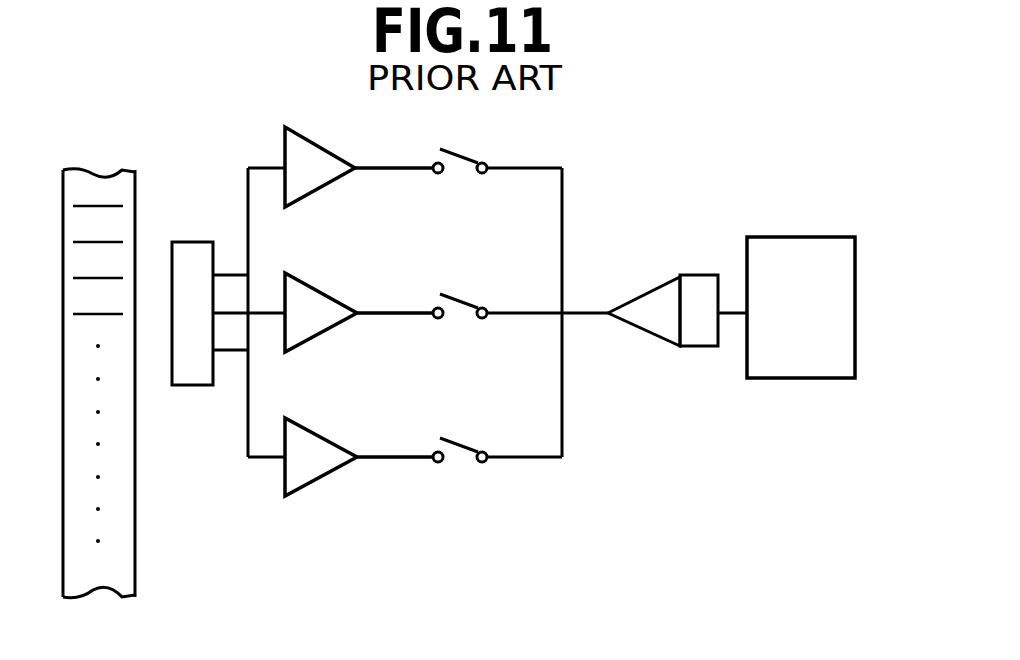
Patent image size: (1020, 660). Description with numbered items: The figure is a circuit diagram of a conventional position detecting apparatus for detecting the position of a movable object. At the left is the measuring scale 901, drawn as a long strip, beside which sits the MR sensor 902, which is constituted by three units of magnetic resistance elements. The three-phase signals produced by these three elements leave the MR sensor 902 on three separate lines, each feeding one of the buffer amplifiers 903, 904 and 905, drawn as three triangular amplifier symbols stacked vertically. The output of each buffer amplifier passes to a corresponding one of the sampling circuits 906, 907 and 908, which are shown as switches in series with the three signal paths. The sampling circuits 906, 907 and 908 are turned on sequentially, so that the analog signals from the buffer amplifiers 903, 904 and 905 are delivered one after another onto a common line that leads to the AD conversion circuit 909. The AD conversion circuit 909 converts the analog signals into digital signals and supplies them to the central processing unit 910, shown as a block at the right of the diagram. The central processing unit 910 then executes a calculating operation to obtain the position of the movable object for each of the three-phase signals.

The measuring scale 901 is at (135, 537).
The MR sensor 902 is at (195, 375).
The buffer amplifier 903 is at (330, 175).
The buffer amplifier 904 is at (323, 317).
The buffer amplifier 905 is at (325, 460).
The sampling circuit 906 is at (458, 170).
The sampling circuit 907 is at (460, 318).
The sampling circuit 908 is at (460, 460).
The AD conversion circuit 909 is at (693, 275).
The central processing unit (CPU) 910 is at (805, 237).